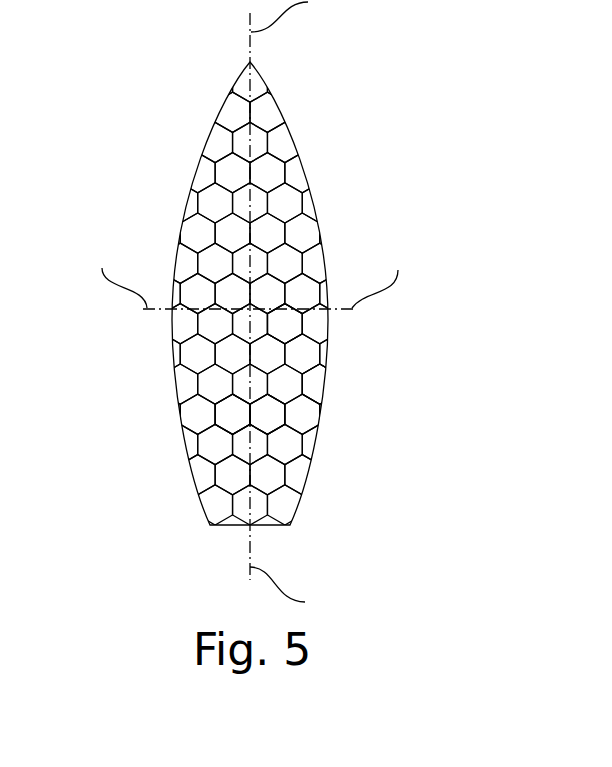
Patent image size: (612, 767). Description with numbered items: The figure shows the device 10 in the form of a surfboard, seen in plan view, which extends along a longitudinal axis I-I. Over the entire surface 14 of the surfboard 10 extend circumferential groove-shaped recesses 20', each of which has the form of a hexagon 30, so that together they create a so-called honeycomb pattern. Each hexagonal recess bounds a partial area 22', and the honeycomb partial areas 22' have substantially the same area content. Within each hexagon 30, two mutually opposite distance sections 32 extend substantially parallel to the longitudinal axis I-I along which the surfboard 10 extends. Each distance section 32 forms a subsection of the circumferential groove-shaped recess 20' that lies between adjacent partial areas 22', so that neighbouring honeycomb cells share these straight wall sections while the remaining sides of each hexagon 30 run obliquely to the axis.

The device 10 is at (262, 309).
The surface 14 is at (293, 473).
The circumferential groove-shaped recess 20' is at (288, 293).
The partial area 22' is at (348, 340).
The hexagon 30 is at (307, 380).
The distance section 32 is at (287, 413).